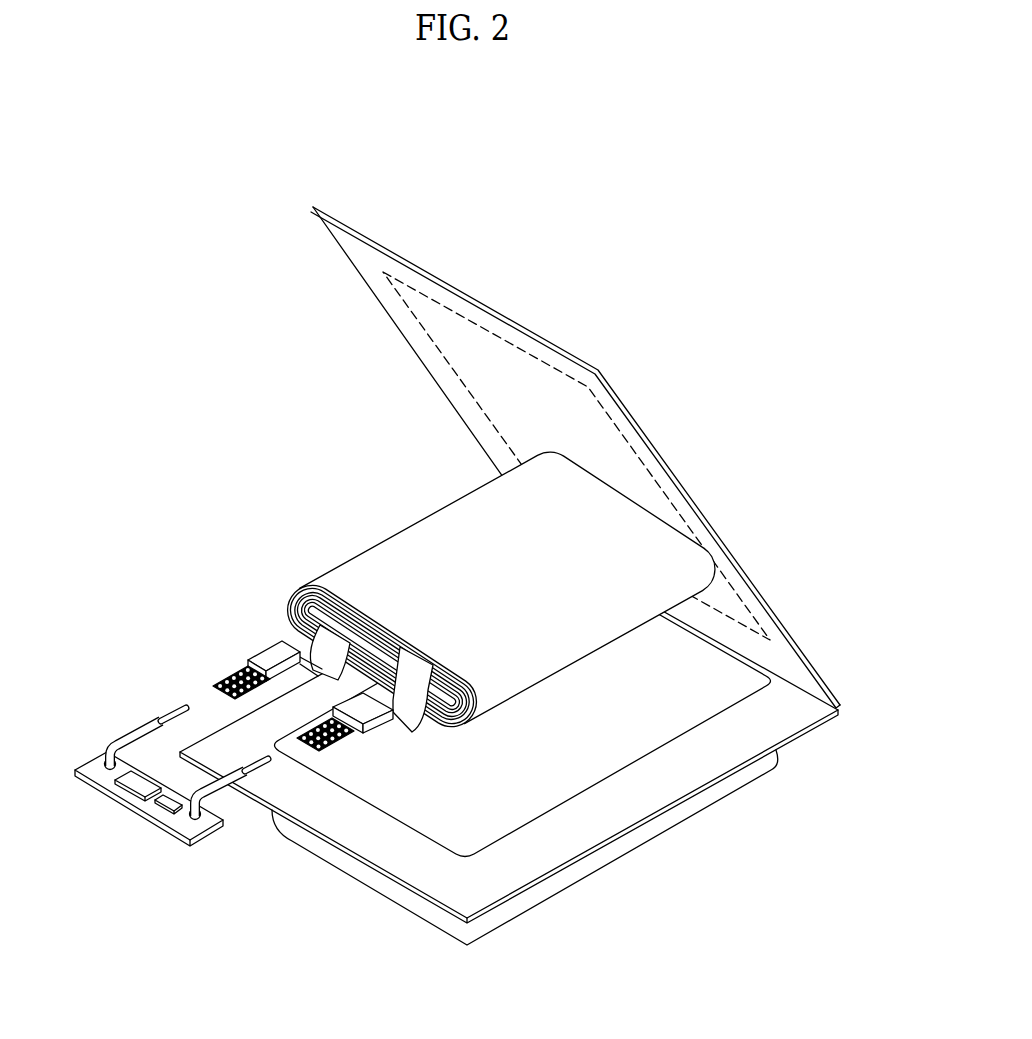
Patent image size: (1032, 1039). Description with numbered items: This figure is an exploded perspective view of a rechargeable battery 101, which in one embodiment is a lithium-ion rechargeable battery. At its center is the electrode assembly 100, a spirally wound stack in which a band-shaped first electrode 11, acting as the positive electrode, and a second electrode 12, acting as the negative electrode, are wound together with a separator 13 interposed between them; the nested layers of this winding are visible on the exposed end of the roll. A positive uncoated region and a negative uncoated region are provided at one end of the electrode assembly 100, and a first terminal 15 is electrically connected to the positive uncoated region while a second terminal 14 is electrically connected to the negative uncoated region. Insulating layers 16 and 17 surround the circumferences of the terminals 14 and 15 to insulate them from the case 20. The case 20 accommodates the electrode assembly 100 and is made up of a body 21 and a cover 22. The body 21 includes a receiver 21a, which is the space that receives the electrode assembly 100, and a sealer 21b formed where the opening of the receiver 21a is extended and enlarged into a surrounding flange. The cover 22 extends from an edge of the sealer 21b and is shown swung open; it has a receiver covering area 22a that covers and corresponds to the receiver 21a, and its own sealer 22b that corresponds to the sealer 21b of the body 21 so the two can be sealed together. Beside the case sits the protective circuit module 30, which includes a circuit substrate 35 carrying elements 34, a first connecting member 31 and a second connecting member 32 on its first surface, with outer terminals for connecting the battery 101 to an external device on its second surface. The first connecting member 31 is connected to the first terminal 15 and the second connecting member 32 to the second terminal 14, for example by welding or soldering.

The rechargeable battery 101 is at (192, 327).
The electrode assembly 100 is at (353, 524).
The first electrode 11 is at (299, 585).
The second electrode 12 is at (298, 604).
The separator 13 is at (297, 593).
The second terminal 14 is at (243, 680).
The first terminal 15 is at (359, 740).
The insulating layer 16 is at (257, 660).
The insulating layer 17 is at (377, 722).
The case 20 is at (638, 386).
The body 21 is at (741, 828).
The receiver 21a is at (587, 768).
The sealer 21b is at (603, 822).
The cover 22 is at (758, 413).
The receiver covering area 22a is at (641, 448).
The sealer 22b is at (636, 487).
The protective circuit module 30 is at (145, 848).
The first connecting member 31 is at (230, 796).
The second connecting member 32 is at (143, 732).
The elements 34 is at (135, 789).
The circuit substrate 35 is at (196, 829).